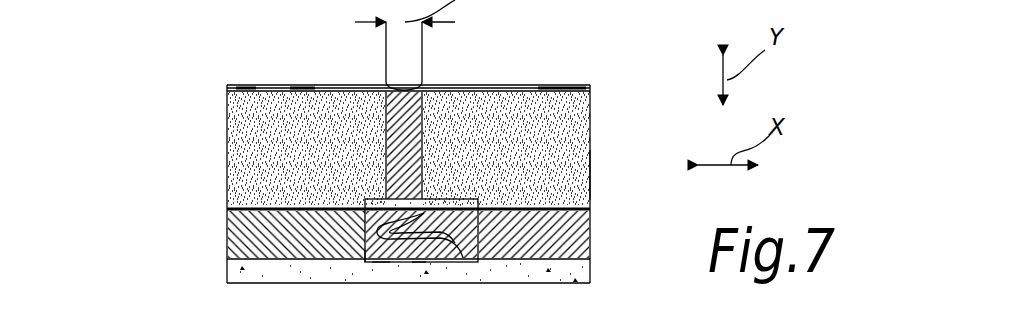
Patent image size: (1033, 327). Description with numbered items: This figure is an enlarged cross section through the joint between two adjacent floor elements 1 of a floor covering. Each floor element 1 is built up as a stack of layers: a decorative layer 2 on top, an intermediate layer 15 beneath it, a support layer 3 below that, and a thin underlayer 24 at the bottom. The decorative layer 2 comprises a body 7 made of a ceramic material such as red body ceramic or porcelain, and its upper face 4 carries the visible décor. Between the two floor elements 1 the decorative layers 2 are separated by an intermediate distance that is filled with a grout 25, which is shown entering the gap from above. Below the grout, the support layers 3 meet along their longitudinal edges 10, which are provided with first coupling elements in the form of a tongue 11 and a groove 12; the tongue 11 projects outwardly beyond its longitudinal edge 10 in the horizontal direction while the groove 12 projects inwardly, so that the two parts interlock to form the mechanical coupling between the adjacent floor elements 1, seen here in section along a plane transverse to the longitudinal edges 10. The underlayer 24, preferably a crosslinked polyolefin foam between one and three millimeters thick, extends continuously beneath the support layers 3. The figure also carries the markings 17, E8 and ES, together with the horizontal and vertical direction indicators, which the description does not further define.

The floor element 1 is at (268, 78).
The decorative layer 2 is at (228, 142).
The support layer 3 is at (240, 247).
The upper face 4 is at (228, 87).
The body 7 is at (590, 172).
The longitudinal edge 10 is at (380, 265).
The tongue 11 is at (458, 250).
The groove 12 is at (368, 251).
The intermediate layer 15 is at (228, 208).
The tear line 17 is at (122, 326).
The underlayer 24 is at (228, 277).
The grout 25 is at (420, 88).
The plane E8 is at (419, 263).
The plane ES is at (647, 317).